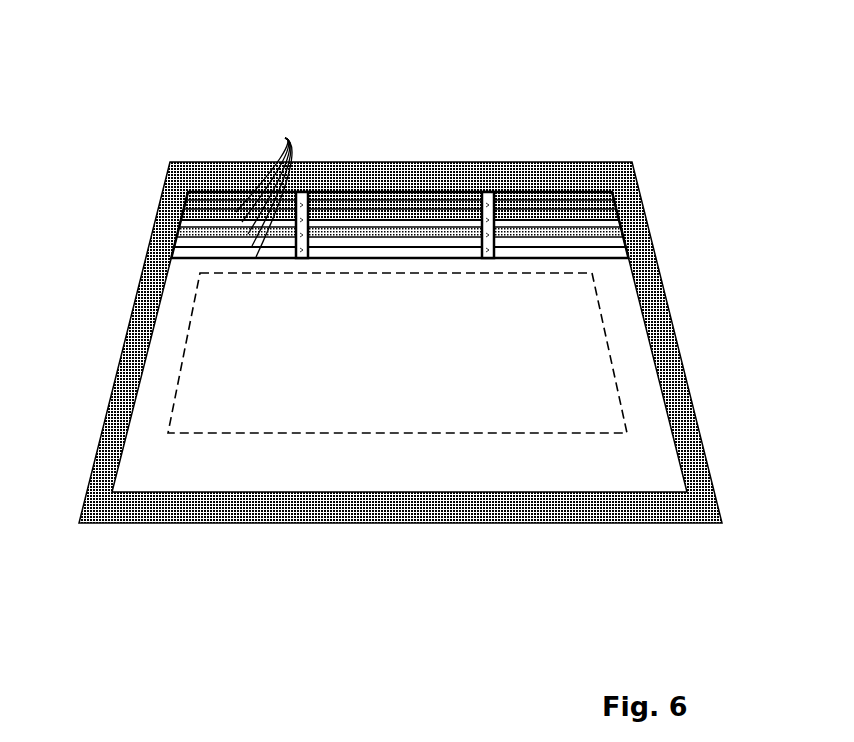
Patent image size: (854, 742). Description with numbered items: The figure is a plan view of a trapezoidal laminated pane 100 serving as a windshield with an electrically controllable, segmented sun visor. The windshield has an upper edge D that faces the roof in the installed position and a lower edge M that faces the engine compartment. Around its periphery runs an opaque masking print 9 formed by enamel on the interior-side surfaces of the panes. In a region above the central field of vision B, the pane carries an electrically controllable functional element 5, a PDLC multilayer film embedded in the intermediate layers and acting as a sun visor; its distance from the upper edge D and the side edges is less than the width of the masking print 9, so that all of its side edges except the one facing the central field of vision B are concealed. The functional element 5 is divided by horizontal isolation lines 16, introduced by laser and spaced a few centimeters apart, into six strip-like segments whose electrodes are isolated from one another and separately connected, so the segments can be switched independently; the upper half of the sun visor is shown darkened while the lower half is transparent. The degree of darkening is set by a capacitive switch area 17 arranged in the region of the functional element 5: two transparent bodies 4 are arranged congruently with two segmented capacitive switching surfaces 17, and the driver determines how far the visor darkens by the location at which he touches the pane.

The laminated pane 100 is at (124, 90).
The masking print 9 is at (665, 312).
The functional element 5 is at (205, 217).
The isolation lines 16 is at (285, 138).
The transparent bodies 4 is at (310, 198).
The capacitive switch area 17 is at (395, 225).
The central field of vision B is at (187, 335).
The upper edge D is at (430, 162).
The lower edge M is at (537, 526).